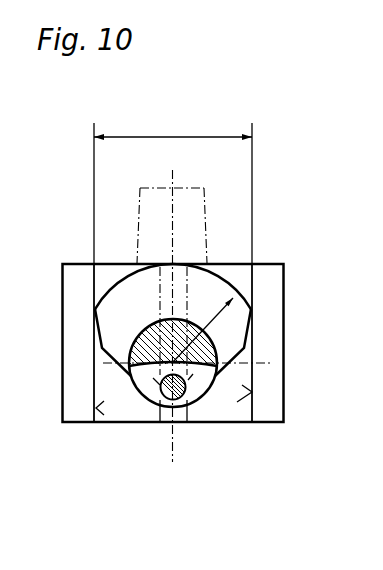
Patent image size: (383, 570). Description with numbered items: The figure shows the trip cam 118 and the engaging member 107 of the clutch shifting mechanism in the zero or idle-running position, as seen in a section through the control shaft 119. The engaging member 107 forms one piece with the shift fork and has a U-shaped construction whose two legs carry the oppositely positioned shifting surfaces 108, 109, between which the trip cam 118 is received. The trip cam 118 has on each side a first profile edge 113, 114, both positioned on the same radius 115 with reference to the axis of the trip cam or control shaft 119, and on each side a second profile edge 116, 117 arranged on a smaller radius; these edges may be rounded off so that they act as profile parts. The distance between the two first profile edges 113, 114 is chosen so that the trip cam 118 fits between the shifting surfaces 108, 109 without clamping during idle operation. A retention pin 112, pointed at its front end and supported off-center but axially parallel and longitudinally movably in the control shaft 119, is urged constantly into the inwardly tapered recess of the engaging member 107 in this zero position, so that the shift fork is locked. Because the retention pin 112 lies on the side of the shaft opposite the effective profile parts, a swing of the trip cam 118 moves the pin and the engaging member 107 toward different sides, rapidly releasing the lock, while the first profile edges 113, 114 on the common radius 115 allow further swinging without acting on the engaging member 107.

The engaging member 107 is at (135, 405).
The shifting surface 108 is at (237, 402).
The shifting surface 109 is at (108, 422).
The retention pin 112 is at (173, 402).
The first profile edge 113 is at (252, 308).
The first profile edge 114 is at (95, 309).
The radius 115 is at (210, 318).
The second profile edge 116 is at (243, 348).
The second profile edge 117 is at (102, 348).
The hatched member 118 is at (131, 334).
The width dimension 119 is at (162, 138).